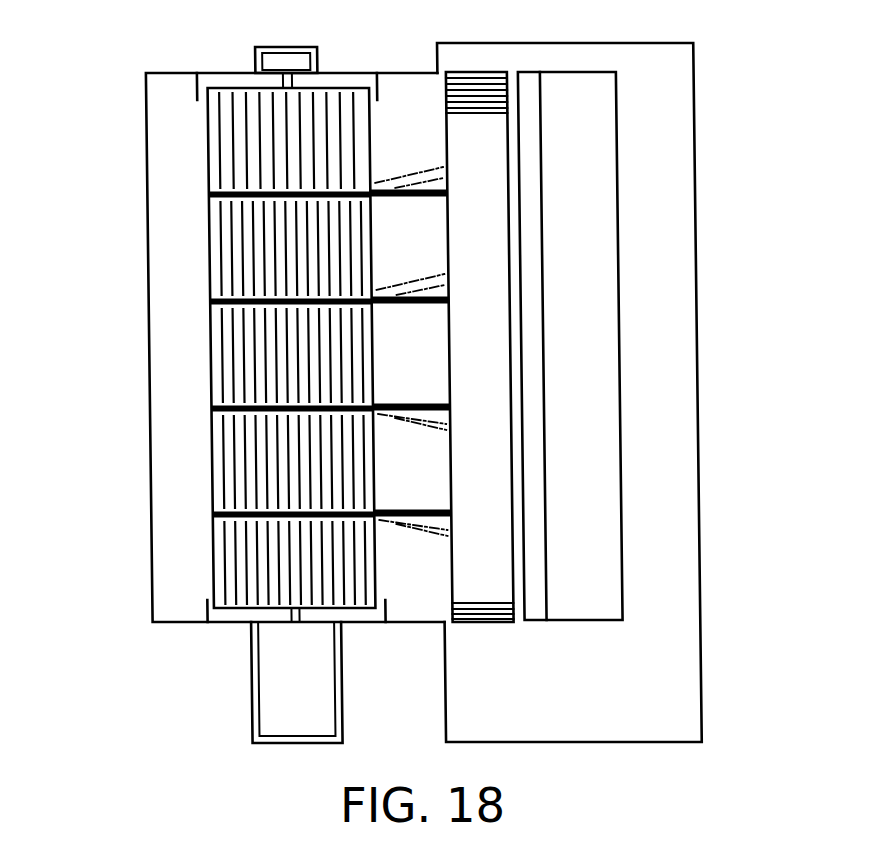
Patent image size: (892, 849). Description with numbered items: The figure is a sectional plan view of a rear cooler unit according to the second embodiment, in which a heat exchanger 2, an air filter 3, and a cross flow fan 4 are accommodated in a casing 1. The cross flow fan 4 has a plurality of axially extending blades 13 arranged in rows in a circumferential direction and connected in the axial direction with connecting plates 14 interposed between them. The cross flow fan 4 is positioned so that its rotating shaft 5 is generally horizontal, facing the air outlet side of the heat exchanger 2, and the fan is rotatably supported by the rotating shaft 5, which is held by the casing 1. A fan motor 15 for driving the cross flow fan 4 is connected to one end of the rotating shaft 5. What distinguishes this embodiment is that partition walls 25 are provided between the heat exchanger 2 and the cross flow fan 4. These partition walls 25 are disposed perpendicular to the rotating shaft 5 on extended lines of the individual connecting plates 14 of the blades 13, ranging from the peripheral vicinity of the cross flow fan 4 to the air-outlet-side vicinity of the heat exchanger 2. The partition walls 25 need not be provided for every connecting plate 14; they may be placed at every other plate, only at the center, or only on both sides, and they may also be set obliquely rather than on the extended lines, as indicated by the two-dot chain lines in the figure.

The casing 1 is at (693, 110).
The heat exchanger 2 is at (475, 622).
The air filter 3 is at (553, 620).
The cross flow fan 4 is at (205, 167).
The rotating shaft 5 is at (282, 82).
The blades 13 is at (224, 363).
The connecting plates 14 is at (233, 299).
The fan motor 15 is at (244, 690).
The partition walls 25 is at (404, 197).